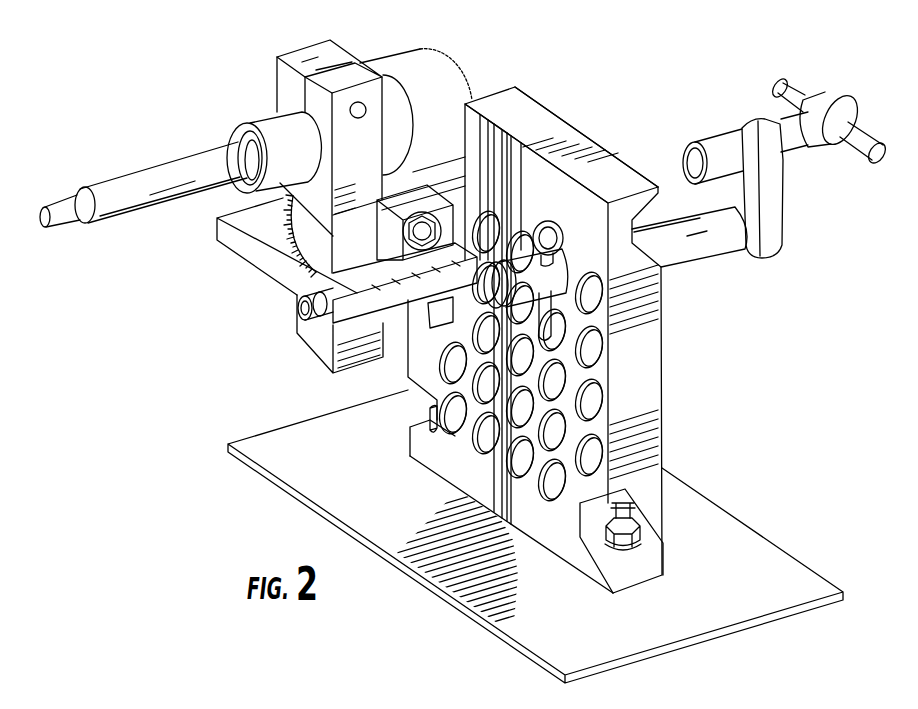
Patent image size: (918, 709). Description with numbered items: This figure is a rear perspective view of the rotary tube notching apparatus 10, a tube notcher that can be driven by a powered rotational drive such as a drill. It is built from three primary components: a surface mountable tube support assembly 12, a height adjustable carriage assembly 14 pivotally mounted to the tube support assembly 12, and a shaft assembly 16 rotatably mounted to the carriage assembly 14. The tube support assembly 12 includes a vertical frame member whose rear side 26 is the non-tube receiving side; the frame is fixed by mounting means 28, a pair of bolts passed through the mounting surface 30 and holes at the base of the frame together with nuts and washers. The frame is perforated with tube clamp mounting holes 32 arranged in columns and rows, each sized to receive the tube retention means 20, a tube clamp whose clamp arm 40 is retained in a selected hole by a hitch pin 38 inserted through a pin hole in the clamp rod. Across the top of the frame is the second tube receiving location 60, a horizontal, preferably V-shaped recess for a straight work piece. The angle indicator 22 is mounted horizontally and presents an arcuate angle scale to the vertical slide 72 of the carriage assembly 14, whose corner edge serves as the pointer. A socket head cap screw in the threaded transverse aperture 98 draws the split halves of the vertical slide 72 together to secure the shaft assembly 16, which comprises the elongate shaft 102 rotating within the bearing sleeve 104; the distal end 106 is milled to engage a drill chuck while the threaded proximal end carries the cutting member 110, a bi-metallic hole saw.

The rotary tube notching apparatus 10 is at (579, 107).
The tube support assembly 12 is at (680, 343).
The carriage assembly 14 is at (266, 92).
The shaft assembly 16 is at (178, 147).
The tube retention means 20 is at (734, 113).
The angle indicator 22 is at (252, 280).
The rear side 26 is at (475, 474).
The mounting means 28 is at (425, 409).
The mounting surface 30 is at (547, 597).
The tube clamp mounting holes 32 is at (590, 452).
The hitch pin 38 is at (542, 223).
The clamp arm 40 is at (684, 244).
The second tube receiving location 60 is at (648, 213).
The vertical slide 72 is at (315, 338).
The transverse aperture 98 is at (366, 116).
The elongate shaft 102 is at (155, 194).
The bearing sleeve 104 is at (298, 151).
The distal end 106 is at (67, 222).
The cutting member 110 is at (418, 66).